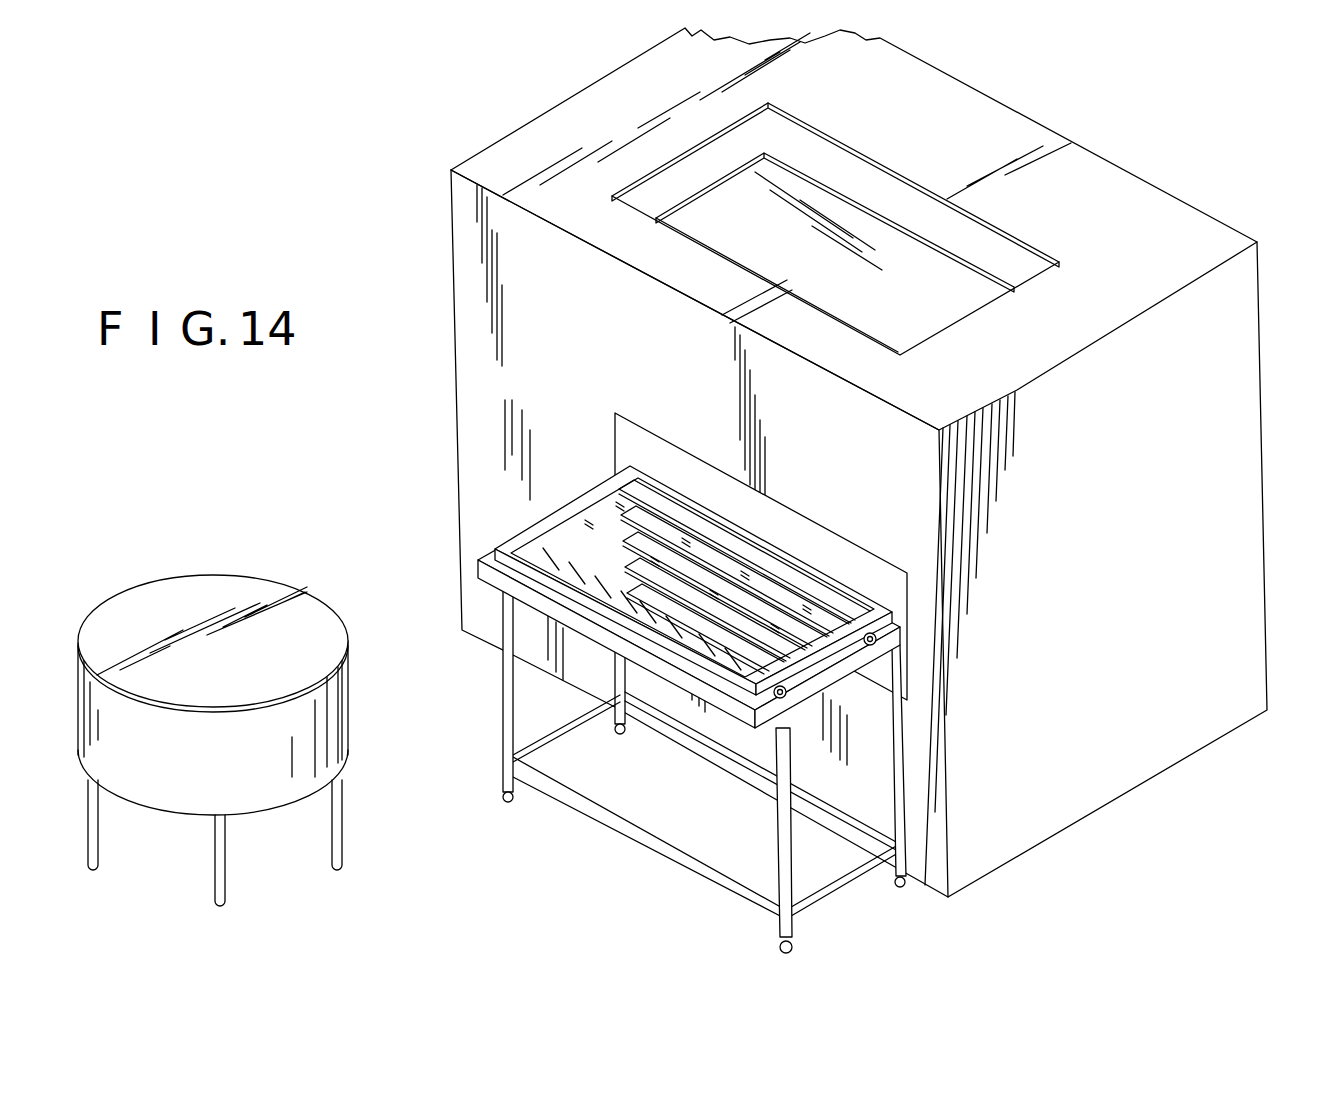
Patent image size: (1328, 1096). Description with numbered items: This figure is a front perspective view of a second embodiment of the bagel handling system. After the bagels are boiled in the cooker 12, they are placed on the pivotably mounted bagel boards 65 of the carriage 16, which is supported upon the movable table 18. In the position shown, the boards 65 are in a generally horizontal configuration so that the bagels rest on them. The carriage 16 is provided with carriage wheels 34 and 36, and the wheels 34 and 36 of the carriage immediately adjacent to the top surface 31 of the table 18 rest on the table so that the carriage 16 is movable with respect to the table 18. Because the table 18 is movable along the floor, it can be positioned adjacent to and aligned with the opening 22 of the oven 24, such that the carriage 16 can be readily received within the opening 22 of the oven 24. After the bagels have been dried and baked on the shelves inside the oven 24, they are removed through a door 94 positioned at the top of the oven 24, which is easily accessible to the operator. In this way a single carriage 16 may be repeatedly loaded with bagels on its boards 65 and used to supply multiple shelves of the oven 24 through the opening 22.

The cooker 12 is at (281, 603).
The carriage 16 is at (498, 548).
The table 18 is at (780, 823).
The opening 22 is at (627, 434).
The oven 24 is at (1243, 461).
The top surface 31 is at (478, 562).
The carriage wheel 34 is at (793, 690).
The carriage wheel 36 is at (863, 652).
The bagel board 65 is at (558, 538).
The door 94 is at (777, 257).